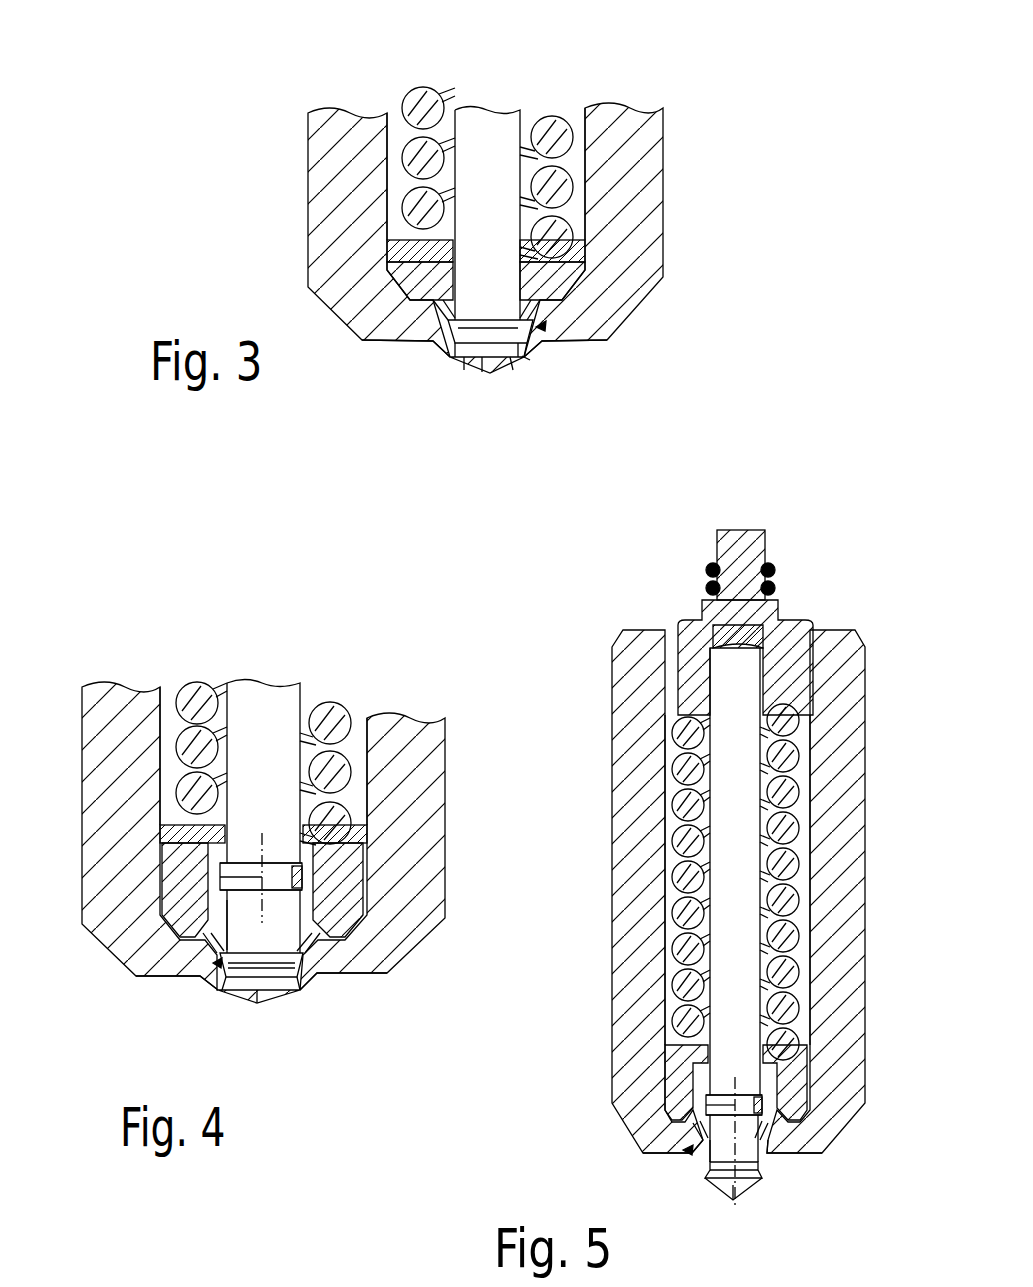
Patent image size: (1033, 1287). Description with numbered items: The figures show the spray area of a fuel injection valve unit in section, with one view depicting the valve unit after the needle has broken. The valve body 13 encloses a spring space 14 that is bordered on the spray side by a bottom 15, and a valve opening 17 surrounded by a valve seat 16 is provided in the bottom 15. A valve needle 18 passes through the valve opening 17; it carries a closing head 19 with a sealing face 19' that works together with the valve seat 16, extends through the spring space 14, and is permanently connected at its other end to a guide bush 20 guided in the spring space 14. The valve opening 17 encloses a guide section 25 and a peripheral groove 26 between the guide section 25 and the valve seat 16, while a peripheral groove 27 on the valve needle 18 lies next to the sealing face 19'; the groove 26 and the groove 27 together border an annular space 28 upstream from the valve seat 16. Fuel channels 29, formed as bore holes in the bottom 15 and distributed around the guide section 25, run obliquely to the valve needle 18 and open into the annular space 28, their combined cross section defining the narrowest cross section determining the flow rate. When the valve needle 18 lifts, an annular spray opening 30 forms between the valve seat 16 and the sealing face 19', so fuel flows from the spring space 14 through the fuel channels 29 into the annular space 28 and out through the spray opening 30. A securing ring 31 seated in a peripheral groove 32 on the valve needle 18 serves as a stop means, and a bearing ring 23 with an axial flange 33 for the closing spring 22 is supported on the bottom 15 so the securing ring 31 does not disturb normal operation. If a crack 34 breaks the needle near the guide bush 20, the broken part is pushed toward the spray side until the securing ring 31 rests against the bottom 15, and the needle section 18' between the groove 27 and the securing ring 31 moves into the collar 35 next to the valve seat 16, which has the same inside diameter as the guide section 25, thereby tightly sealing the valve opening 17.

In FIG. 3, the valve body 13 is at (640, 158).
In FIG. 4, the valve body 13 is at (415, 735).
In FIG. 5, the valve body 13 is at (835, 790).
In FIG. 3, the spring space 14 is at (403, 185).
In FIG. 4, the spring space 14 is at (175, 765).
In FIG. 5, the spring space 14 is at (815, 855).
In FIG. 3, the bottom 15 is at (585, 310).
In FIG. 4, the bottom 15 is at (173, 957).
In FIG. 5, the bottom 15 is at (790, 1140).
In FIG. 3, the valve seat 16 is at (463, 370).
In FIG. 3, the valve opening 17 is at (530, 345).
In FIG. 4, the valve opening 17 is at (214, 965).
In FIG. 5, the valve opening 17 is at (705, 1160).
In FIG. 3, the valve needle 18 is at (540, 163).
In FIG. 4, the valve needle 18 is at (306, 786).
In FIG. 5, the valve needle 18 is at (660, 916).
In FIG. 4, the section of valve needle 18' is at (367, 938).
In FIG. 5, the section of valve needle 18' is at (776, 1193).
In FIG. 3, the closing head 19 is at (505, 430).
In FIG. 4, the closing head 19 is at (276, 1050).
In FIG. 5, the closing head 19 is at (760, 1226).
In FIG. 3, the sealing face 19' is at (541, 413).
In FIG. 5, the guide bush 20 is at (785, 632).
In FIG. 3, the closing spring 22 is at (553, 188).
In FIG. 4, the closing spring 22 is at (194, 739).
In FIG. 5, the closing spring 22 is at (790, 895).
In FIG. 3, the bearing ring 23 is at (565, 268).
In FIG. 4, the bearing ring 23 is at (170, 850).
In FIG. 5, the bearing ring 23 is at (805, 1075).
In FIG. 3, the guide section 25 is at (420, 265).
In FIG. 3, the peripheral groove 26 is at (523, 365).
In FIG. 3, the peripheral groove 27 is at (475, 372).
In FIG. 4, the peripheral groove 27 is at (283, 993).
In FIG. 5, the peripheral groove 27 is at (730, 1192).
In FIG. 3, the annular space 28 is at (450, 362).
In FIG. 4, the annular space 28 is at (302, 963).
In FIG. 5, the annular space 28 is at (778, 1200).
In FIG. 3, the fuel channels 29 is at (445, 345).
In FIG. 4, the fuel channels 29 is at (212, 974).
In FIG. 5, the fuel channels 29 is at (700, 1150).
In FIG. 3, the spray opening 30 is at (530, 360).
In FIG. 4, the securing ring 31 is at (302, 868).
In FIG. 5, the securing ring 31 is at (700, 1085).
In FIG. 4, the peripheral groove 32 is at (302, 888).
In FIG. 5, the peripheral groove 32 is at (705, 1100).
In FIG. 4, the axial flange 33 is at (155, 907).
In FIG. 5, the crack 34 is at (707, 608).
In FIG. 4, the collar 35 is at (305, 985).
In FIG. 5, the collar 35 is at (770, 1175).